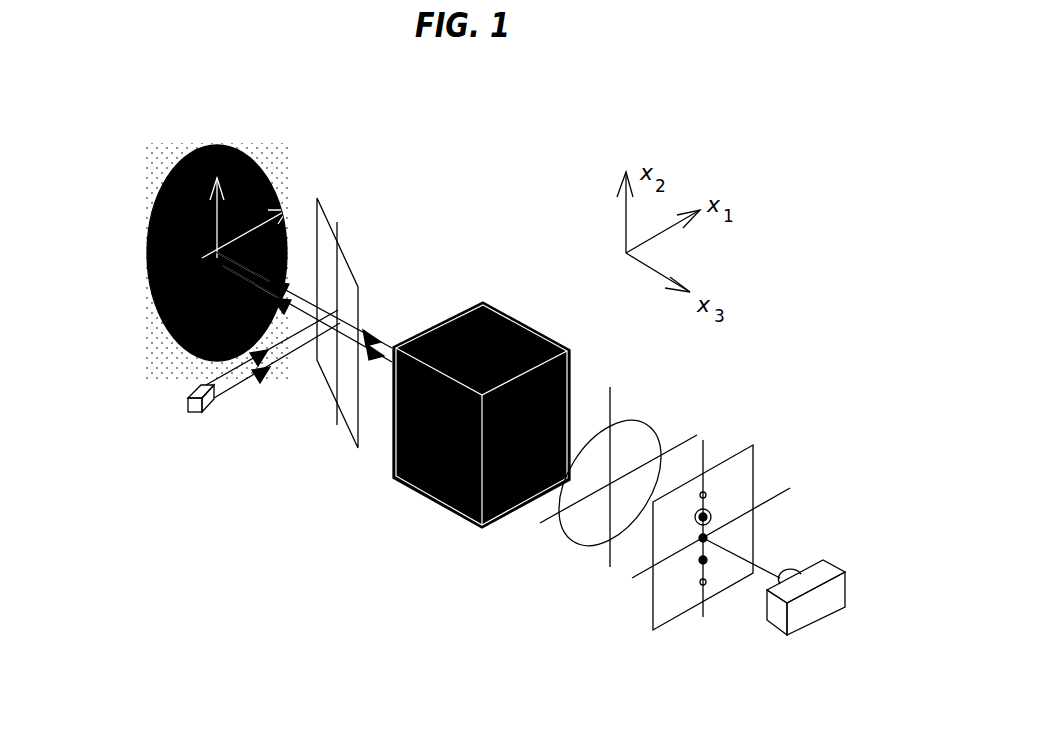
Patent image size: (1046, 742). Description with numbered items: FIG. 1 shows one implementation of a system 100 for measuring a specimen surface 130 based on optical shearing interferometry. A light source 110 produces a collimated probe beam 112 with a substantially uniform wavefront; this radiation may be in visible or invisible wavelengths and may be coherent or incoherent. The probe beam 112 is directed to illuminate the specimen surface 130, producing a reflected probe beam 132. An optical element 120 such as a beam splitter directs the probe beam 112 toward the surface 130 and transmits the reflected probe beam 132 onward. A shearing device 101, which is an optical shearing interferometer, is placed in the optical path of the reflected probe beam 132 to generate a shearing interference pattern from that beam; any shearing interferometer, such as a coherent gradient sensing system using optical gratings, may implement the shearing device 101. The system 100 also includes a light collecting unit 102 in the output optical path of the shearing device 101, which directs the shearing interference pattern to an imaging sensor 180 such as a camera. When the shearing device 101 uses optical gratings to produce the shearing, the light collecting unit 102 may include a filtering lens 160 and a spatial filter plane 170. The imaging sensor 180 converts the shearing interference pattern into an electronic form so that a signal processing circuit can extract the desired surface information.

The system 100 is at (727, 132).
The shearing device 101 is at (440, 478).
The light collecting unit 102 is at (705, 537).
The light source 110 is at (190, 393).
The collimated probe beam 112 is at (277, 363).
The optical element 120 is at (348, 258).
The specimen surface 130 is at (193, 150).
The reflected probe beam 132 is at (364, 340).
The filtering lens 160 is at (652, 459).
The spatial filter plane 170 is at (760, 523).
The imaging sensor 180 is at (823, 570).